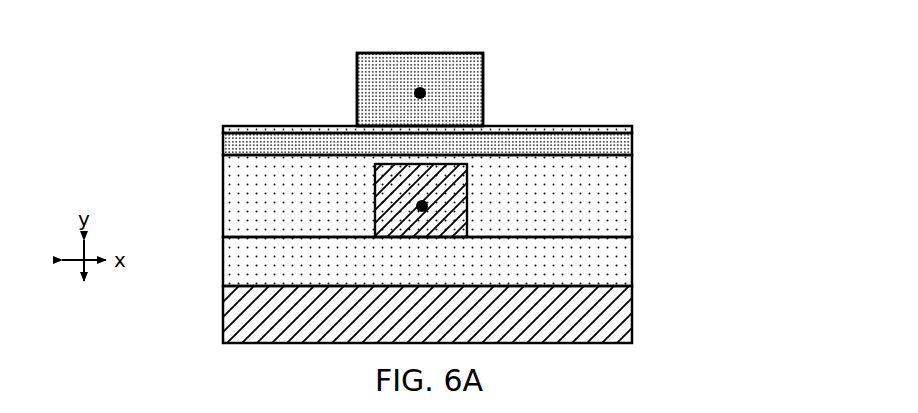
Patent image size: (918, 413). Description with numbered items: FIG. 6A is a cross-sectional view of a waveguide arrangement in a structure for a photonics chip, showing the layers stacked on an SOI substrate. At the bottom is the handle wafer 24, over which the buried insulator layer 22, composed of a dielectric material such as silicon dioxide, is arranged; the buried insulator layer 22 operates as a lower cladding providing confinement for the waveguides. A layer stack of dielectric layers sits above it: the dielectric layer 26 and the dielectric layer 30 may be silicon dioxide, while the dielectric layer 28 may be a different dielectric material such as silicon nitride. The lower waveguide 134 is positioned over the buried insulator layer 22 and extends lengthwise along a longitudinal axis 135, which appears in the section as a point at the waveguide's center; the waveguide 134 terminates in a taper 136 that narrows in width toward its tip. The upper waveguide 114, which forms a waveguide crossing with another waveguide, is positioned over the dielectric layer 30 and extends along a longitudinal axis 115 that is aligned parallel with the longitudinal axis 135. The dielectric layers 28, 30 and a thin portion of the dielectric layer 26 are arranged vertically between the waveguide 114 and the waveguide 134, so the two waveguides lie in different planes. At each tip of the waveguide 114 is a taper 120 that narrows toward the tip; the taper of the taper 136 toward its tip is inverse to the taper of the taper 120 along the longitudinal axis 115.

The buried insulator layer 22 is at (240, 259).
The handle wafer 24 is at (240, 317).
The dielectric layer 26 is at (617, 219).
The dielectric layer 28 is at (240, 143).
The dielectric layer 30 is at (613, 127).
The waveguide 114 is at (440, 77).
The longitudinal axis 115 is at (420, 93).
The taper 120 is at (348, 79).
The waveguide 134 is at (440, 177).
The longitudinal axis 135 is at (422, 206).
The taper 136 is at (365, 195).